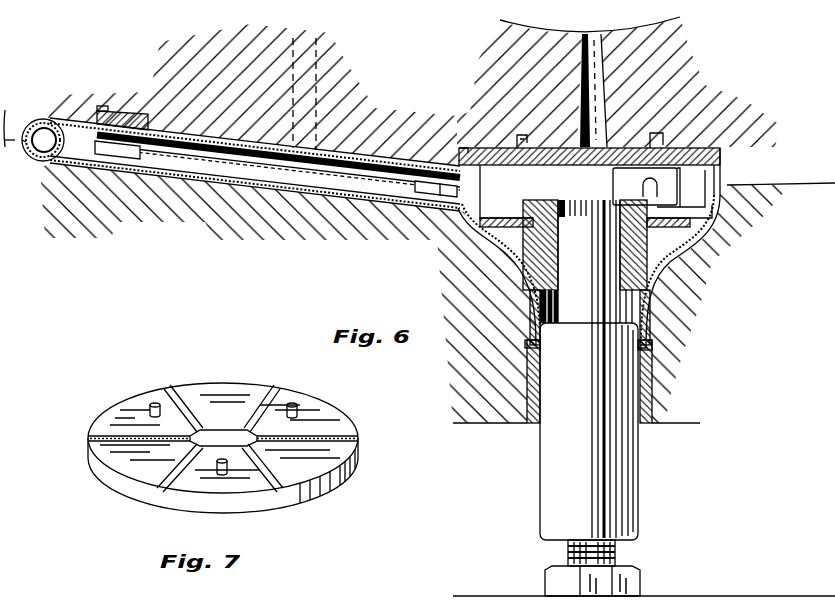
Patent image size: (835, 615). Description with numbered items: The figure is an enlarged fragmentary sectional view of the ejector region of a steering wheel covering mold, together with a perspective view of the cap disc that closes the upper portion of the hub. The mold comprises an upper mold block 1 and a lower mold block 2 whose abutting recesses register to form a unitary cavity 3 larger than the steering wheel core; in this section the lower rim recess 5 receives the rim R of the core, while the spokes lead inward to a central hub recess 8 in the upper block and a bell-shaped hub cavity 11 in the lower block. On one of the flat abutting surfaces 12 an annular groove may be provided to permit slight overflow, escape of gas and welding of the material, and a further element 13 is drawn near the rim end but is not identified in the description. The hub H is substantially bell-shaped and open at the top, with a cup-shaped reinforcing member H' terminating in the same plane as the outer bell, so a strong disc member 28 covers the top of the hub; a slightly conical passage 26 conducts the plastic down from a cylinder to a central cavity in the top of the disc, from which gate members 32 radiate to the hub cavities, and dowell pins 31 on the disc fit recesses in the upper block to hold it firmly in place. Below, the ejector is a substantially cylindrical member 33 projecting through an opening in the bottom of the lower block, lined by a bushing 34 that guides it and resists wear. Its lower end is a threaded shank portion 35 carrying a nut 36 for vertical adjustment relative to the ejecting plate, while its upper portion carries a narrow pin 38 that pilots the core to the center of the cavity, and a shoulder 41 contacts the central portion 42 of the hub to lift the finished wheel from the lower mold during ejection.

In FIG. 6, the upper mold block 1 is at (618, 95).
In FIG. 6, the lower mold block 2 is at (670, 398).
In FIG. 6, the unitary cavity 3 is at (205, 177).
In FIG. 6, the rim recess 5 is at (277, 166).
In FIG. 6, the central hub recess 8 is at (727, 158).
In FIG. 6, the bell-shaped hub cavity 11 is at (663, 278).
In FIG. 6, the flat surface 12 is at (14, 138).
In FIG. 6, the end edge 13 is at (11, 150).
In FIG. 6, the rim R is at (50, 157).
In FIG. 6, the passage 26 is at (581, 99).
In FIG. 6, the disc member 28 is at (682, 155).
In FIG. 7, the disc member 28 is at (337, 418).
In FIG. 6, the dowell pins 31 is at (510, 128).
In FIG. 7, the dowell pins 31 is at (150, 407).
In FIG. 7, the gate members 32 is at (257, 390).
In FIG. 6, the cylindrical member 33 is at (550, 492).
In FIG. 6, the bushing 34 is at (538, 410).
In FIG. 6, the threaded shank portion 35 is at (580, 548).
In FIG. 6, the nut 36 is at (555, 581).
In FIG. 6, the narrow pin 38 is at (585, 369).
In FIG. 6, the shoulder 41 is at (547, 327).
In FIG. 6, the central portion of the steering wheel hub 42 is at (538, 202).
In FIG. 6, the hub H is at (498, 274).
In FIG. 6, the cup-shaped reinforcing member H' is at (585, 211).